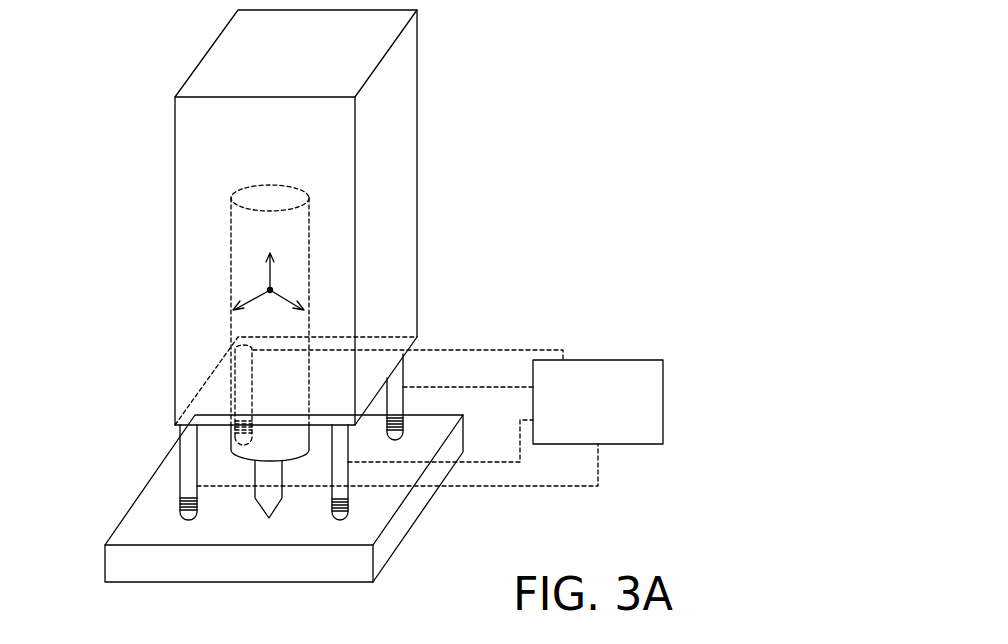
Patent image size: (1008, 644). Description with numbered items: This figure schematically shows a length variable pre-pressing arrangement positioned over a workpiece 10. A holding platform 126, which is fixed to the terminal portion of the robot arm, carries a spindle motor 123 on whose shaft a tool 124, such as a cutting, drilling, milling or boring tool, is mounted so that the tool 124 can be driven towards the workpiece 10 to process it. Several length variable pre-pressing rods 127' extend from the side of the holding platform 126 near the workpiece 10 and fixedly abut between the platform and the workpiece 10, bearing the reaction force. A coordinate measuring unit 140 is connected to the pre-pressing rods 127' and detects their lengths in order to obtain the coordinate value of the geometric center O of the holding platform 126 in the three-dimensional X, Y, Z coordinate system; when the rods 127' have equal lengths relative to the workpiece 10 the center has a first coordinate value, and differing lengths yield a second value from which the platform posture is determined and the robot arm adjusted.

The holding platform 126 is at (417, 57).
The spindle motor 123 is at (228, 242).
The length variable pre-pressing rod 127' is at (307, 432).
The tool 124 is at (270, 515).
The workpiece 10 is at (393, 535).
The coordinate measuring unit 140 is at (610, 360).